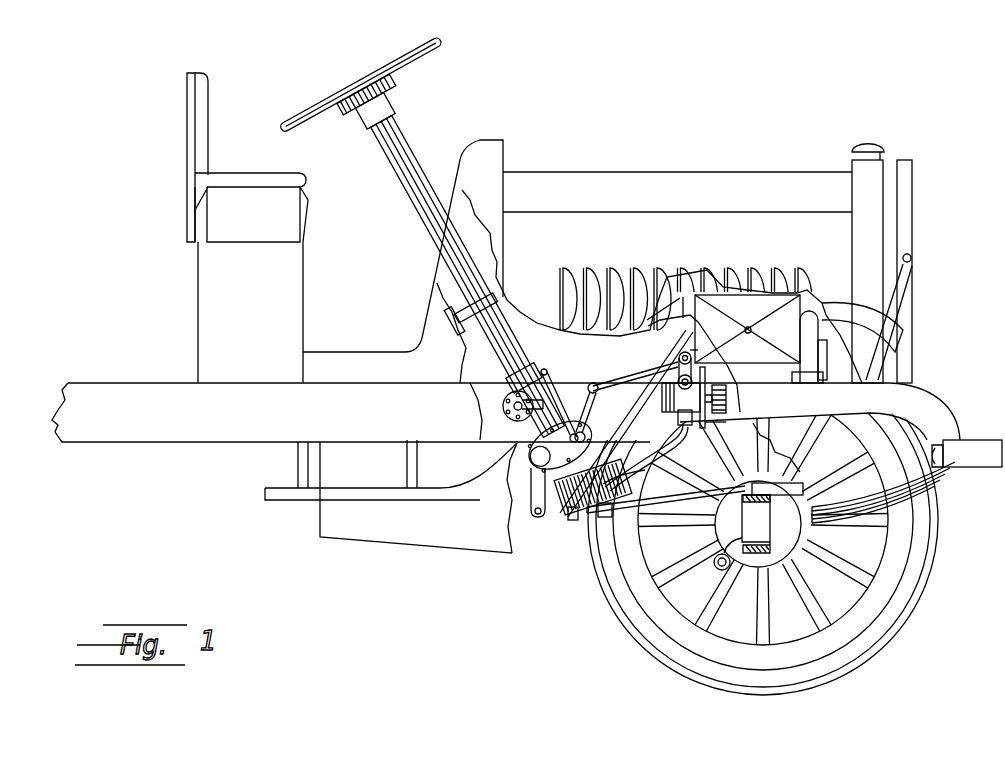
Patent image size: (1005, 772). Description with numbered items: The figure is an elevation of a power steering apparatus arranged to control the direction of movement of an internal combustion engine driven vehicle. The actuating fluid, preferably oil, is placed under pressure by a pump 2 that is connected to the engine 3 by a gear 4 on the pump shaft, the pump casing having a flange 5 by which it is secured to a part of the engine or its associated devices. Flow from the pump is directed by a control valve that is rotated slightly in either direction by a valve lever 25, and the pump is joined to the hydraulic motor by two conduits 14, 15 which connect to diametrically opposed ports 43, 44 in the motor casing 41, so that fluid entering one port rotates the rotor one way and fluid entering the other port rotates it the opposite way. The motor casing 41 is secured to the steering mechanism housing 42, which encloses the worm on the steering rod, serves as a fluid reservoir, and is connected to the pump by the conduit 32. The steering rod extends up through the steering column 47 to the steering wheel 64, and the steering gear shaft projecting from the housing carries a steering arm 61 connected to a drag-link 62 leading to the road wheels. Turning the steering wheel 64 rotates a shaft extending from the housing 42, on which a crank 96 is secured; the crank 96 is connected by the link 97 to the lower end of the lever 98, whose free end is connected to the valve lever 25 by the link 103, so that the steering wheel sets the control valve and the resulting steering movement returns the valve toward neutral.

The steering wheel 64 is at (436, 45).
The steering column 47 is at (402, 144).
The steering mechanism housing 42 is at (552, 388).
The crank 96 is at (505, 396).
The link 97 is at (552, 414).
The steering arm 61 is at (538, 491).
The port 44 is at (580, 497).
The motor casing 41 is at (600, 514).
The link 103 is at (633, 385).
The lever 98 is at (584, 419).
The conduit 14 is at (618, 383).
The conduit 32 is at (681, 438).
The port 43 is at (632, 479).
The conduit 15 is at (684, 352).
The pump 2 is at (716, 385).
The gear 4 is at (727, 400).
The flange 5 is at (716, 419).
The engine 3 is at (723, 329).
The valve lever 25 is at (694, 355).
The drag-link 62 is at (677, 497).